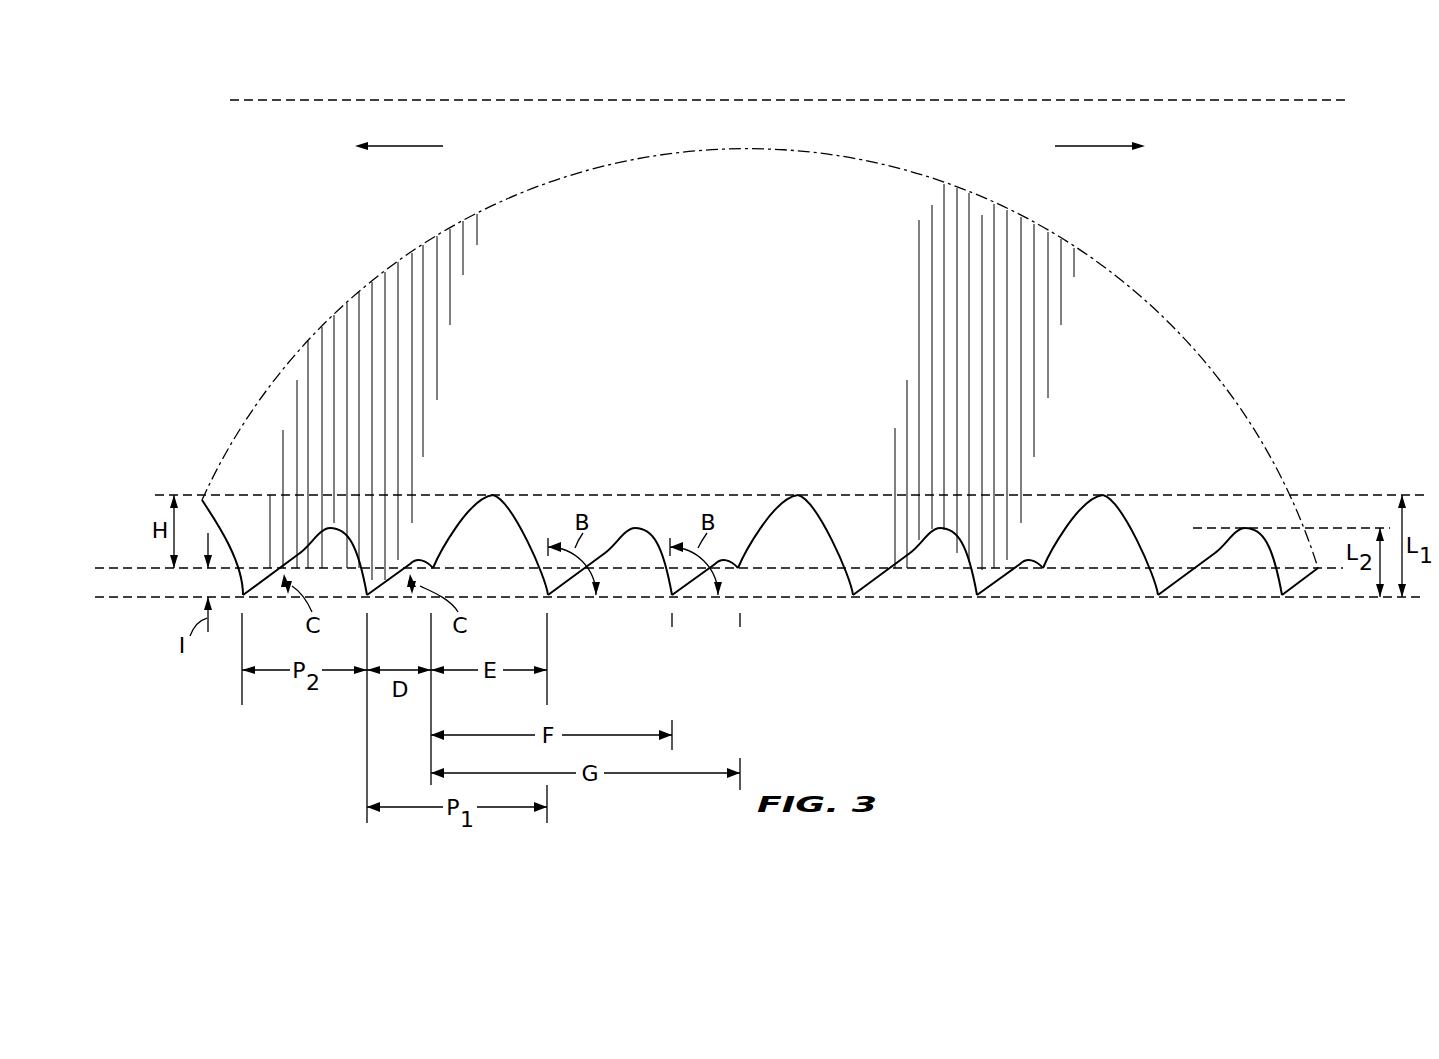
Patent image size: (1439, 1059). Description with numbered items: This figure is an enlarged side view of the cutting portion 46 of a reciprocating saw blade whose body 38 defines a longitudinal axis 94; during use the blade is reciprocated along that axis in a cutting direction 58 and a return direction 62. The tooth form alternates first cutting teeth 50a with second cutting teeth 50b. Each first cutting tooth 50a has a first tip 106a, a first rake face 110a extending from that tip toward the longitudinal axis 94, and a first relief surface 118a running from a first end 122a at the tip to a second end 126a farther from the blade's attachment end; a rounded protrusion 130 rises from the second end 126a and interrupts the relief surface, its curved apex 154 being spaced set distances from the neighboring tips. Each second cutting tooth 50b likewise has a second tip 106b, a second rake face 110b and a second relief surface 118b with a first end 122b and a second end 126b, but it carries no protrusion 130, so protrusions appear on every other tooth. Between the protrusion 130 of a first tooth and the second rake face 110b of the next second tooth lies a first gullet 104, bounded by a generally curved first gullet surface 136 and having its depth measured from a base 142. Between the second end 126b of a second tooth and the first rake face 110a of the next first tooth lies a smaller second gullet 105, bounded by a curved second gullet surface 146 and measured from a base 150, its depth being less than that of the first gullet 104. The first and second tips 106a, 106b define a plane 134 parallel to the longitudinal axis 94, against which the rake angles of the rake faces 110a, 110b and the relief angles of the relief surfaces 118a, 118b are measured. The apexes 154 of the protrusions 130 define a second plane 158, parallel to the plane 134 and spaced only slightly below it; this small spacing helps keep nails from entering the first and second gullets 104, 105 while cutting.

The body 38 is at (838, 200).
The longitudinal axis 94 is at (1215, 100).
The cutting direction 58 is at (404, 148).
The return direction 62 is at (1095, 150).
The first cutting teeth 50a is at (1038, 545).
The second cutting teeth 50b is at (870, 549).
The base of first gullet 142 is at (493, 493).
The first gullet surface 136 is at (515, 512).
The base of second gullet 150 is at (633, 526).
The second gullet surface 146 is at (655, 540).
The apex of protrusion 154 is at (428, 560).
The protrusion 130 is at (794, 494).
The second end of first relief surface 126a is at (1022, 540).
The second end of second relief surface 126b is at (1210, 538).
The first end of first relief surface 122a is at (956, 604).
The first end of second relief surface 122b is at (1170, 566).
The first rake face 110a is at (970, 558).
The second rake face 110b is at (1147, 548).
The first tip 106a is at (978, 598).
The second tip 106b is at (1158, 598).
The first relief surface 118a is at (1010, 574).
The second relief surface 118b is at (1212, 557).
The first gullet 104 is at (1057, 606).
The second gullet 105 is at (1271, 609).
The cutting portion 46 is at (1201, 668).
The plane defined by protrusion apexes 158 is at (133, 562).
The plane defined by tips 134 is at (137, 606).